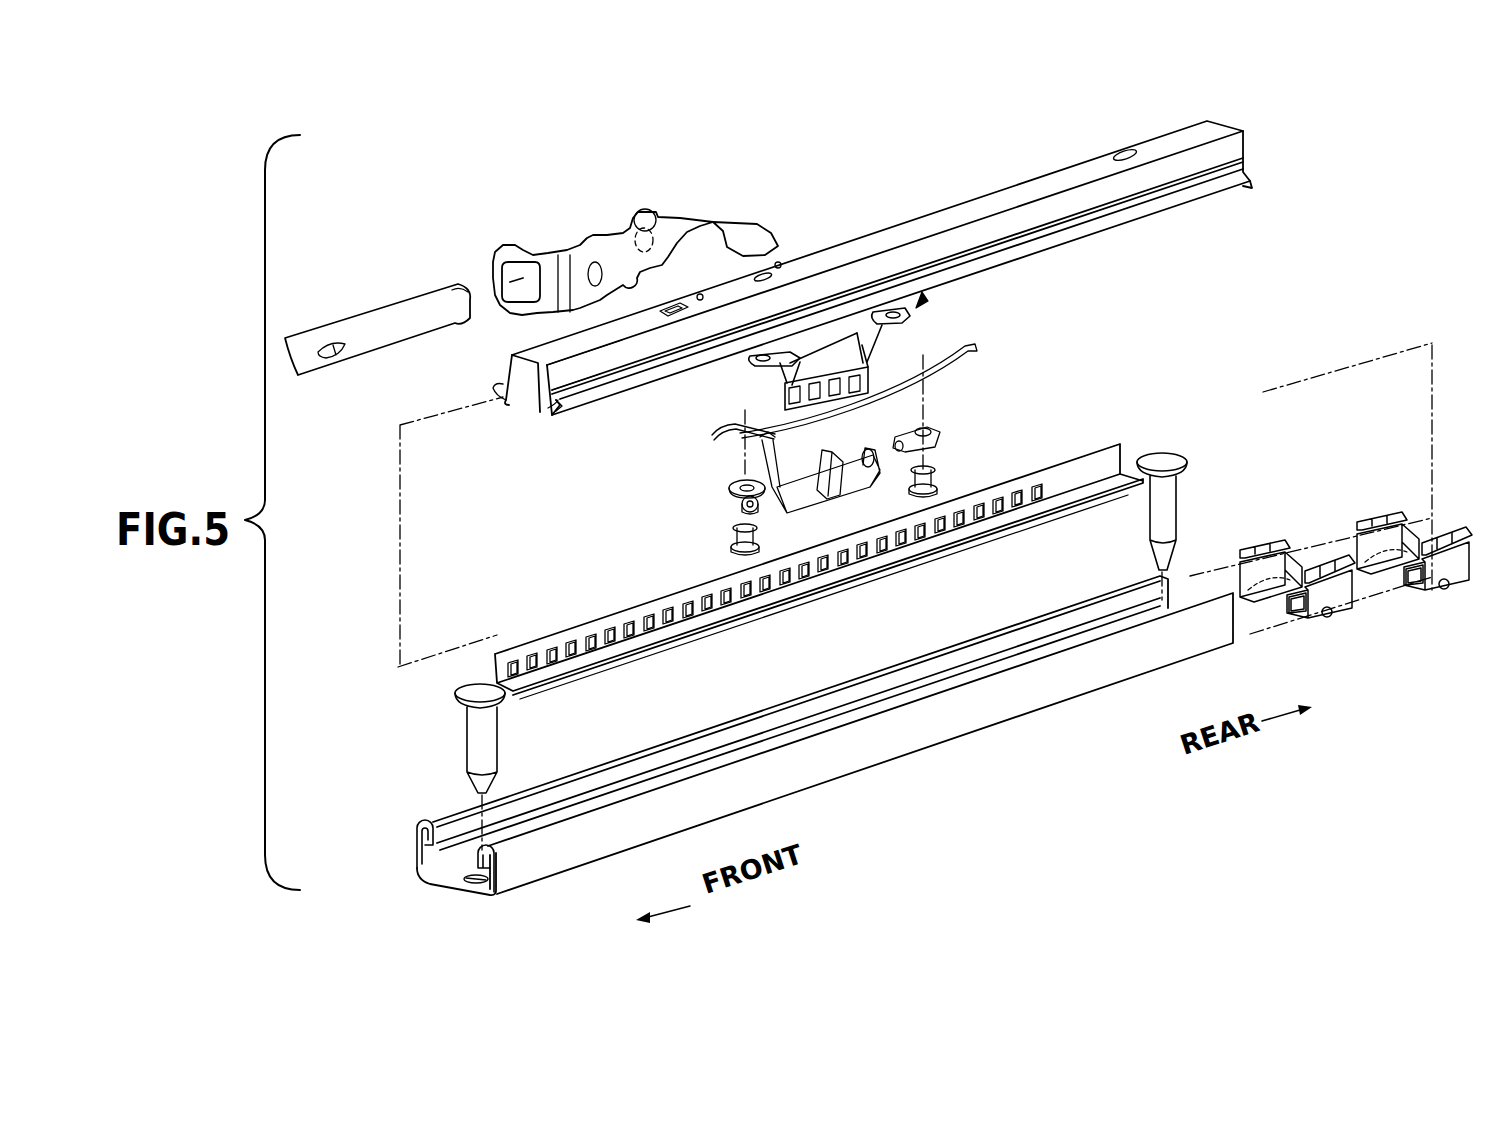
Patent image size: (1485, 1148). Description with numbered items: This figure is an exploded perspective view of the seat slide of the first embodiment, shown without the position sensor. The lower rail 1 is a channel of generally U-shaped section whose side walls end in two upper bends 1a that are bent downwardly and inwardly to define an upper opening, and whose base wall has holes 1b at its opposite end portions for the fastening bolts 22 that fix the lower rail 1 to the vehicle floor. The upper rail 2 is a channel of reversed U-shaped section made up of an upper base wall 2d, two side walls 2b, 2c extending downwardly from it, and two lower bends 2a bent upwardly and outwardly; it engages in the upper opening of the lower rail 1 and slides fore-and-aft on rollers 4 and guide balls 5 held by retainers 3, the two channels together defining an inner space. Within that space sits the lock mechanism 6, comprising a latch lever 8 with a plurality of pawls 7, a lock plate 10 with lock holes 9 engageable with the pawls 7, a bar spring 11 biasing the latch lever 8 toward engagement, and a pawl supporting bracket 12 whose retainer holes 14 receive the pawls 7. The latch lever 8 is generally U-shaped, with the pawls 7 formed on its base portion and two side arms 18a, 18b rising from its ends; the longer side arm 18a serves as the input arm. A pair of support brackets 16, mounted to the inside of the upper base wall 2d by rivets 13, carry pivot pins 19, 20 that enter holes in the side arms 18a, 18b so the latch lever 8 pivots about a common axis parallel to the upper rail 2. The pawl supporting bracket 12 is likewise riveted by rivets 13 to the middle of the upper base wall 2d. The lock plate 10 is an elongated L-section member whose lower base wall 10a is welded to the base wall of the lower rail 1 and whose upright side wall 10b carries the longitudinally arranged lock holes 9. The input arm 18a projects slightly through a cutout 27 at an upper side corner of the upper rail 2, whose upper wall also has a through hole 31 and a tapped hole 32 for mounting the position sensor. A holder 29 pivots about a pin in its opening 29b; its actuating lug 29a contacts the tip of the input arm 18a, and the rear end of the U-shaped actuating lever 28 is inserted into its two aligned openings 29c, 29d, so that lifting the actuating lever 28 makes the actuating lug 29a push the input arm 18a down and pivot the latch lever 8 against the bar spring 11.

The lower rail 1 is at (1157, 650).
The upper bends 1a is at (478, 858).
The holes 1b is at (445, 884).
The upper rail 2 is at (1010, 182).
The lower bends 2a is at (493, 390).
The side wall 2b is at (510, 395).
The side wall 2c is at (598, 368).
The upper base wall 2d is at (620, 336).
The retainers 3 is at (1316, 608).
The rollers 4 is at (1352, 540).
The guide balls 5 is at (1392, 504).
The lock mechanism 6 is at (922, 300).
The pawls 7 is at (836, 460).
The latch lever 8 is at (808, 508).
The lock holes 9 is at (903, 547).
The lock plate 10 is at (565, 634).
The lower base wall 10a is at (655, 642).
The upright side wall 10b is at (602, 630).
The bar spring 11 is at (962, 358).
The pawl supporting bracket 12 is at (837, 332).
The rivets 13 is at (733, 546).
The retainer holes 14 is at (910, 318).
The support brackets 16 is at (728, 489).
The side arm 18a is at (748, 440).
The side arm 18b is at (926, 430).
The pivot pin 19 is at (744, 508).
The pivot pin 20 is at (871, 470).
The fastening bolts 22 is at (478, 732).
The cutout 27 is at (780, 264).
The actuating lever 28 is at (385, 322).
The holder 29 is at (612, 235).
The actuating lug 29a is at (765, 238).
The opening 29b is at (590, 262).
The opening 29c is at (500, 266).
The opening 29d is at (640, 226).
The through hole 31 is at (672, 303).
The tapped hole 32 is at (700, 294).